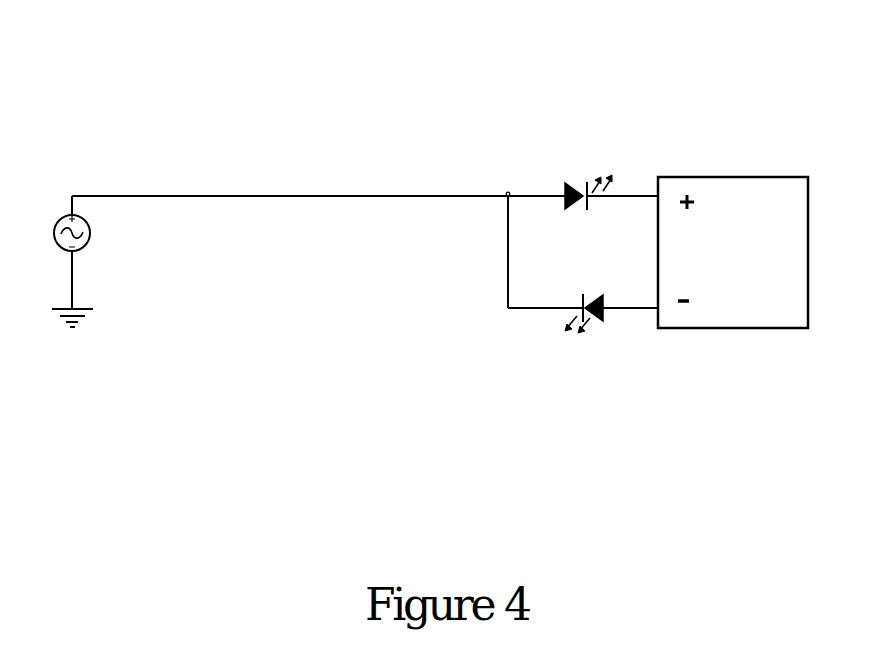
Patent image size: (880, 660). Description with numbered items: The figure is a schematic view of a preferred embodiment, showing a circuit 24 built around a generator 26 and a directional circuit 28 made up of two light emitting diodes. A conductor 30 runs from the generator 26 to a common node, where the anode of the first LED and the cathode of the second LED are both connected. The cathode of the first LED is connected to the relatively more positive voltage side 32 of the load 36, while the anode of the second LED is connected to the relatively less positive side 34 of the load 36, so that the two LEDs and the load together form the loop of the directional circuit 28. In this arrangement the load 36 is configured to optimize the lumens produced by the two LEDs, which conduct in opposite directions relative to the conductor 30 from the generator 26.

The circuit 24 is at (361, 122).
The generator 26 is at (83, 193).
The directional circuit 28 is at (623, 195).
The conductor 30 is at (272, 197).
The relatively more positive voltage side 32 is at (607, 198).
The relatively less positive side 34 is at (627, 312).
The load 36 is at (770, 295).